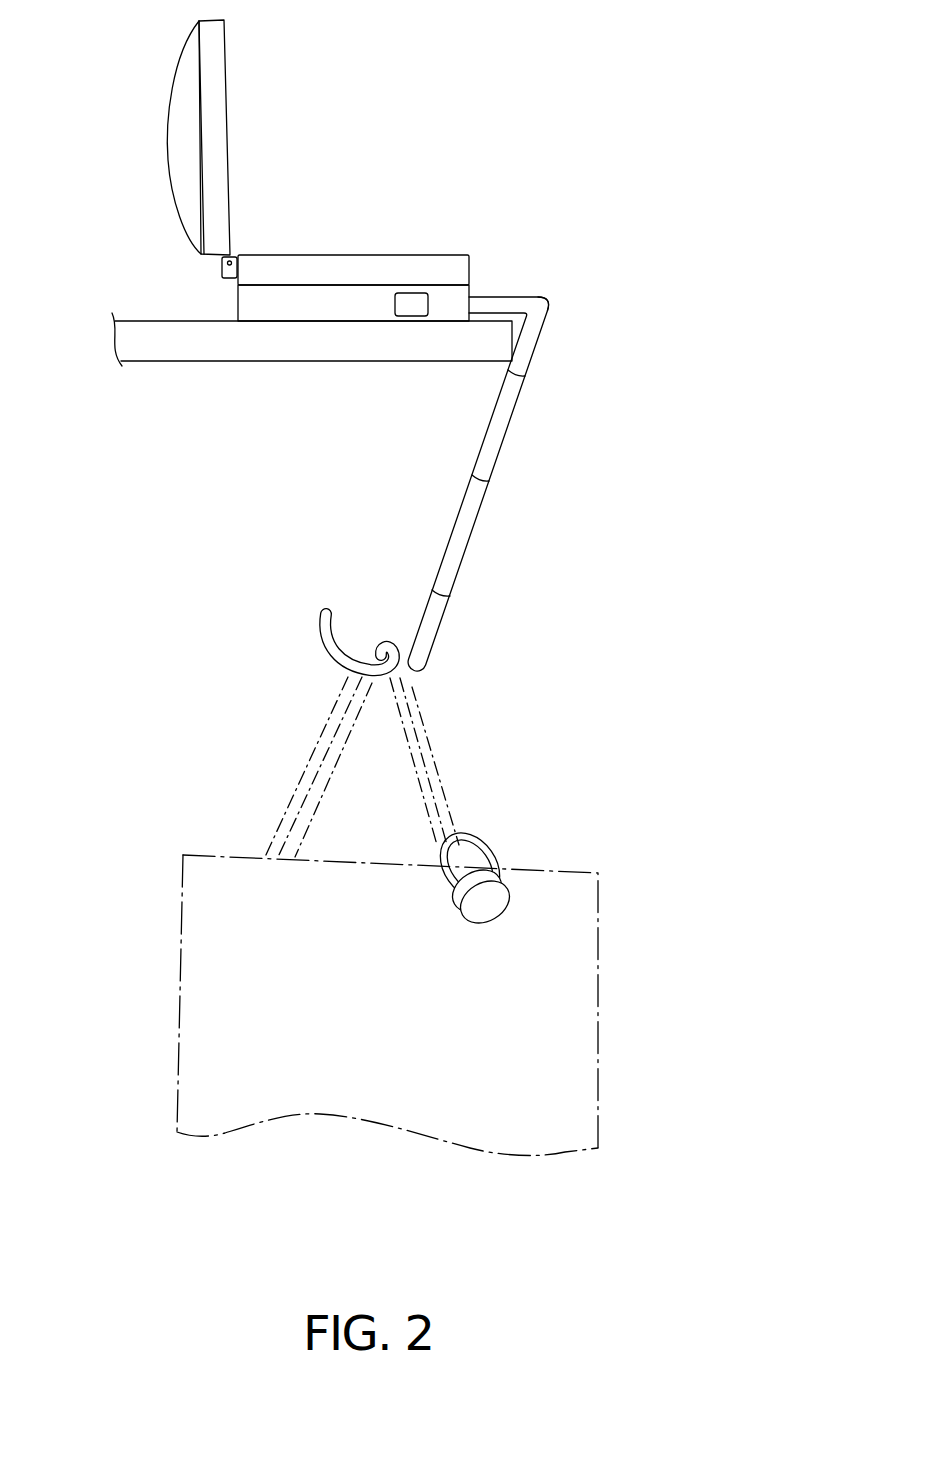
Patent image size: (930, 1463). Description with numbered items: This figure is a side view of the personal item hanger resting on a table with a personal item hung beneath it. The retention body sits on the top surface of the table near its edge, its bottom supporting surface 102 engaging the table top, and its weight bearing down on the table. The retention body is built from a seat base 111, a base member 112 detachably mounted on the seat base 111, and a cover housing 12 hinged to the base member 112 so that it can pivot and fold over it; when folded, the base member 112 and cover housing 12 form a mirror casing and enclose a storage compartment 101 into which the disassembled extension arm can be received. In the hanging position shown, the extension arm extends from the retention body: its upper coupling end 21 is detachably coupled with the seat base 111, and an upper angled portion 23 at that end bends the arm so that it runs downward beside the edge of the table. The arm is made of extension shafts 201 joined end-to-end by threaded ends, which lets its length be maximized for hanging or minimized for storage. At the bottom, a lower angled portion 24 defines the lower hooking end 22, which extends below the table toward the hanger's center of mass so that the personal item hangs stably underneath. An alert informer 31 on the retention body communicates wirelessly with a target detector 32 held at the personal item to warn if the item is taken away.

The cover housing 12 is at (182, 143).
The storage compartment 101 is at (442, 198).
The base member 112 is at (432, 260).
The seat base 111 is at (452, 301).
The alert informer 31 is at (412, 316).
The bottom supporting surface 102 is at (305, 323).
The upper coupling end 21 is at (578, 456).
The extension shafts 201 is at (427, 628).
The upper angled portion 23 is at (558, 318).
The lower angled portion 24 is at (360, 637).
The lower hooking end 22 is at (345, 672).
The target detector 32 is at (493, 903).